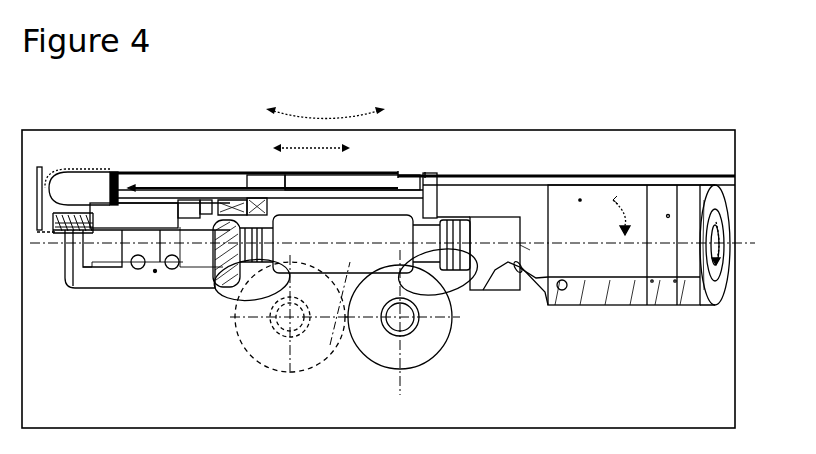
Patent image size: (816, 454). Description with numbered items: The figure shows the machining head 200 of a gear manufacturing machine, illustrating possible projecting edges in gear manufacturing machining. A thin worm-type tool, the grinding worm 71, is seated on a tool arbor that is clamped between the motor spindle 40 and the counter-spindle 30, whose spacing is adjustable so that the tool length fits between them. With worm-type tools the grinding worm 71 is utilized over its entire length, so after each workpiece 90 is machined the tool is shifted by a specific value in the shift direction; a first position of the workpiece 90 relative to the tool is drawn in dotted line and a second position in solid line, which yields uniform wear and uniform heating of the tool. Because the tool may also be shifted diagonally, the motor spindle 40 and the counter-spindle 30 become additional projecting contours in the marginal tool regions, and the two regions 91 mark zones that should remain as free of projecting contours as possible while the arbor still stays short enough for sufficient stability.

The machining head 200 is at (547, 112).
The counter-spindle 30 is at (142, 272).
The motor spindle 40 is at (573, 232).
The grinding worm 71 is at (345, 272).
The workpiece 90 is at (247, 350).
The regions 91 is at (228, 298).